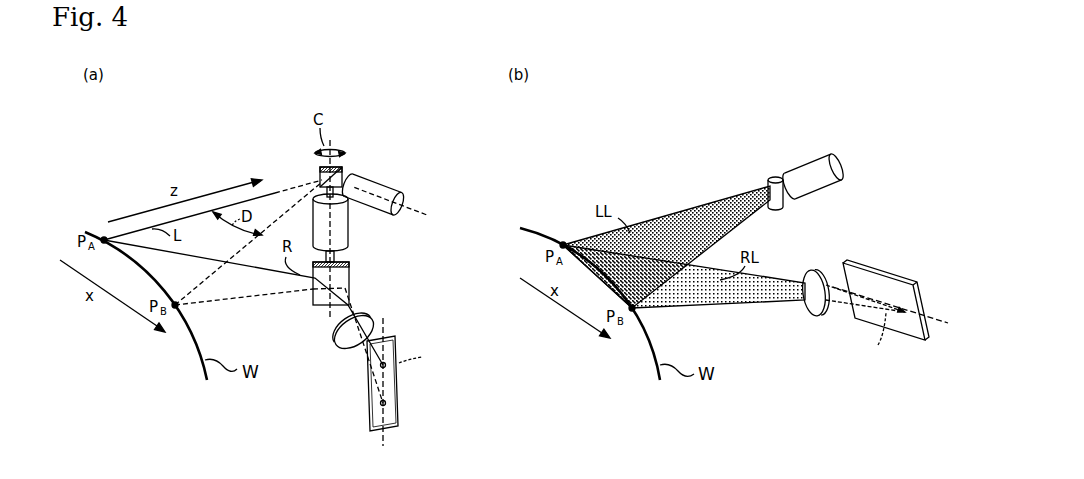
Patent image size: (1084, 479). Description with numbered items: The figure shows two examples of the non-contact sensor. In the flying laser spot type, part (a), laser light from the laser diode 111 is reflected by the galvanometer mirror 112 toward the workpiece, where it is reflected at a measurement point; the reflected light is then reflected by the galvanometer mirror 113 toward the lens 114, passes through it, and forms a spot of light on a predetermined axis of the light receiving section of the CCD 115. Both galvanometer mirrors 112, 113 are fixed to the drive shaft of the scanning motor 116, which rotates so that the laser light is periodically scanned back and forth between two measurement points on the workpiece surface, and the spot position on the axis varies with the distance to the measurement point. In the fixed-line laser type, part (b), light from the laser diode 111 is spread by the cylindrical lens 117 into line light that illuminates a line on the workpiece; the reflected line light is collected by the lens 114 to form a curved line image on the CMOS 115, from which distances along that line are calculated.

The laser diode 111 is at (375, 182).
The galvanometer mirror 112 is at (343, 175).
The galvanometer mirror 113 is at (350, 280).
The lens 114 is at (333, 345).
The CCD 115 is at (400, 406).
The scanning motor 116 is at (350, 230).
The cylindrical lens 117 is at (771, 176).